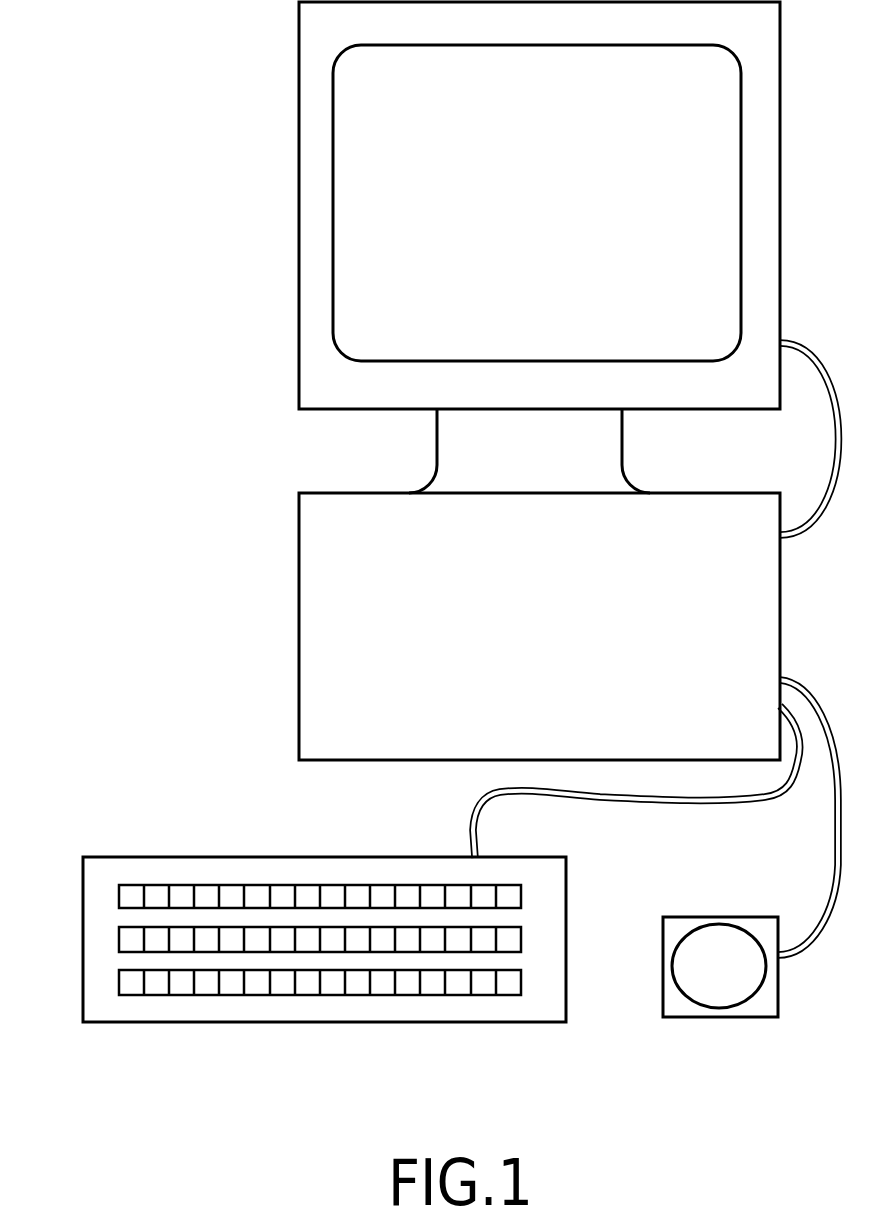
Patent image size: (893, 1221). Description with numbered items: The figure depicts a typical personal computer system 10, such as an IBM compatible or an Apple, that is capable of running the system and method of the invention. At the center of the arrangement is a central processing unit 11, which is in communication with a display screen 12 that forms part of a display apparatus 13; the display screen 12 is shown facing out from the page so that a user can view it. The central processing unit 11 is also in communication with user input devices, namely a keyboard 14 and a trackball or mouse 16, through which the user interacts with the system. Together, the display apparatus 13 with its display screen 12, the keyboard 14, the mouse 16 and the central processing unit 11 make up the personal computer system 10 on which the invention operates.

The personal computer system 10 is at (445, 532).
The central processing unit 11 is at (298, 619).
The display screen 12 is at (333, 238).
The display apparatus 13 is at (298, 100).
The keyboard 14 is at (312, 857).
The mouse 16 is at (778, 985).